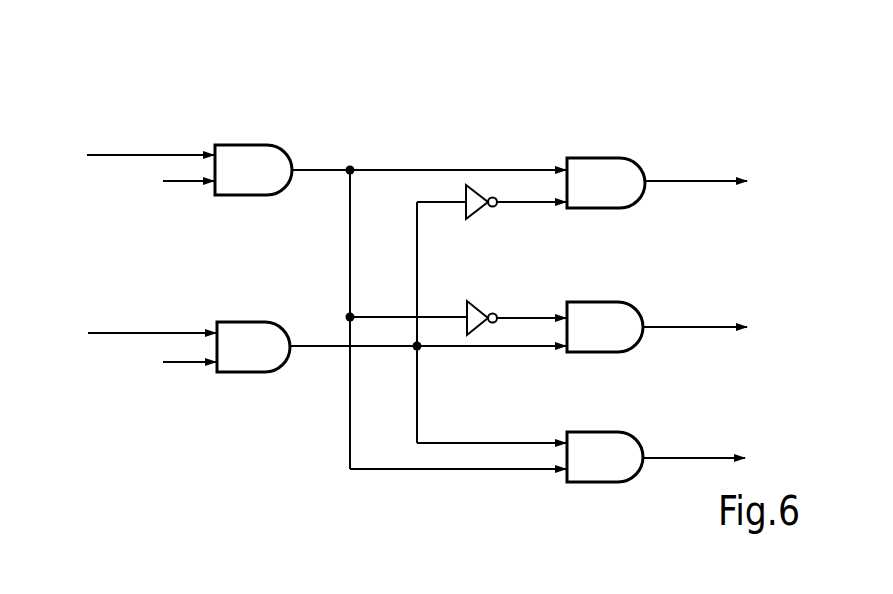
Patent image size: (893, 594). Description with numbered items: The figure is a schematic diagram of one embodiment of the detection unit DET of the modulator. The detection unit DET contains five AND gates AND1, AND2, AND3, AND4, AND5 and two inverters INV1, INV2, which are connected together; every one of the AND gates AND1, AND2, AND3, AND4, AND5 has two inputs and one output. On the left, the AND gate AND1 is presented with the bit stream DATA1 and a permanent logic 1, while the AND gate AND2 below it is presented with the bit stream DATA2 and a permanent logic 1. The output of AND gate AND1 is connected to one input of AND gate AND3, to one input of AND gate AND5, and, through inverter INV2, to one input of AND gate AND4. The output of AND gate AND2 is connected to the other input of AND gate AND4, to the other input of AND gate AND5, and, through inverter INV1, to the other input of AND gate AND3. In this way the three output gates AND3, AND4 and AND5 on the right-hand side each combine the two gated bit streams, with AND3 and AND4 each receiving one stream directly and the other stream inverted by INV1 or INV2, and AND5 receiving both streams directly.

The detection unit DET is at (160, 70).
The bit stream DATA1 is at (126, 135).
The bit stream DATA2 is at (132, 316).
The permanent logic 1 is at (180, 270).
The AND gate AND1 is at (390, 292).
The AND gate AND2 is at (391, 328).
The AND gate AND3 is at (657, 163).
The AND gate AND4 is at (657, 310).
The AND gate AND5 is at (656, 446).
The inverter INV1 is at (491, 314).
The inverter INV2 is at (516, 301).